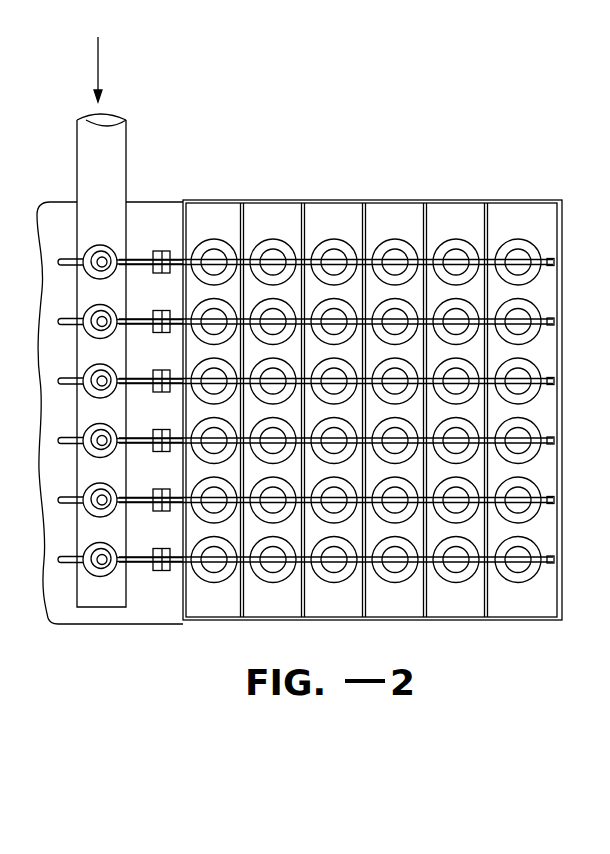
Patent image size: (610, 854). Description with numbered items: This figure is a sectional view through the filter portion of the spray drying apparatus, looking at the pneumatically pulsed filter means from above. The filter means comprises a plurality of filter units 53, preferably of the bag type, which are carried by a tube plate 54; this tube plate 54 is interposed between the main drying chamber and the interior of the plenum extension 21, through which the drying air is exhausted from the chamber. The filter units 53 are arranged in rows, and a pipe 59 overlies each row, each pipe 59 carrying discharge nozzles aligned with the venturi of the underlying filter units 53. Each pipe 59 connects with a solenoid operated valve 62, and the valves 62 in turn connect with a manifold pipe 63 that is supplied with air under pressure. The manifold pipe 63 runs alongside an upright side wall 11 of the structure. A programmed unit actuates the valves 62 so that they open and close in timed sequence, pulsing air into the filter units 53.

The upright side wall 11 is at (56, 212).
The plenum extension 21 is at (406, 186).
The filter unit 53 is at (462, 233).
The tube plate 54 is at (548, 214).
The pipe 59 is at (338, 258).
The solenoid operated valve 62 is at (110, 246).
The manifold pipe 63 is at (112, 178).